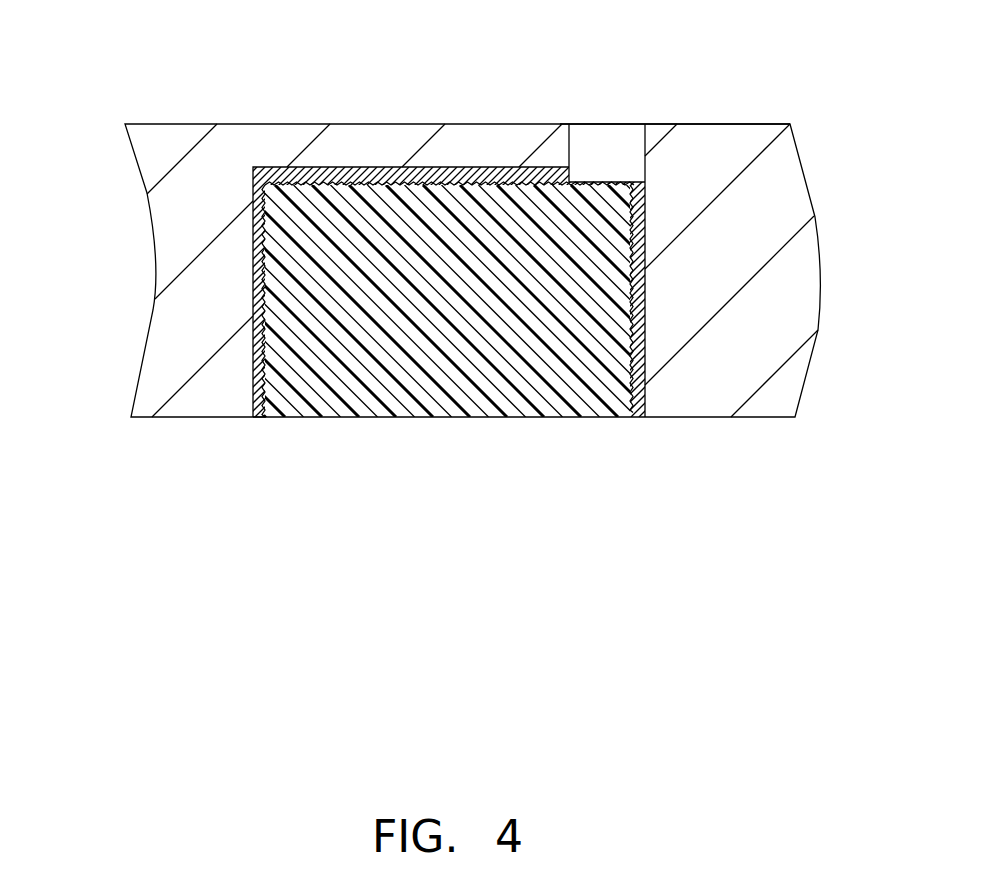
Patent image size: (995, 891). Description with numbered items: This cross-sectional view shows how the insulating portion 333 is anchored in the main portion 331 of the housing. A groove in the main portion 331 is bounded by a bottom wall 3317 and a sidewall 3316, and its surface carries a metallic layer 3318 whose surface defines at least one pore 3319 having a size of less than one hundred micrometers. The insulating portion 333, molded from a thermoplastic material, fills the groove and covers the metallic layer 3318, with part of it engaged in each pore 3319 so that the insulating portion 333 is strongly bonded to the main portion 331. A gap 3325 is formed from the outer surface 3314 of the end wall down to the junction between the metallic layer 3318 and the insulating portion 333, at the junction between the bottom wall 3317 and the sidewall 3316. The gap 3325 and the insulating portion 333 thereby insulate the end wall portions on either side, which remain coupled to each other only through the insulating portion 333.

The main portion 331 is at (280, 138).
The outer surface 3314 is at (700, 118).
The gap 3325 is at (618, 148).
The insulating portion 333 is at (385, 390).
The bottom wall 3317 is at (297, 176).
The sidewall 3316 is at (261, 290).
The pore 3319 is at (256, 384).
The metallic layer 3318 is at (259, 418).